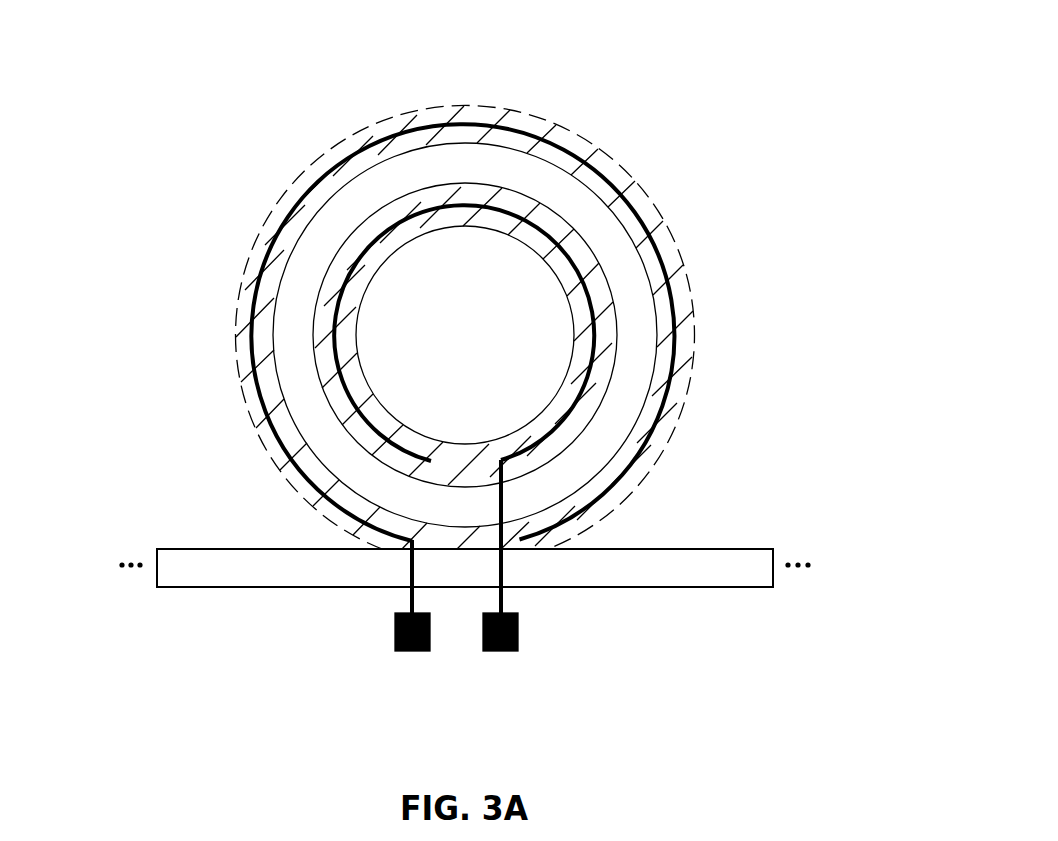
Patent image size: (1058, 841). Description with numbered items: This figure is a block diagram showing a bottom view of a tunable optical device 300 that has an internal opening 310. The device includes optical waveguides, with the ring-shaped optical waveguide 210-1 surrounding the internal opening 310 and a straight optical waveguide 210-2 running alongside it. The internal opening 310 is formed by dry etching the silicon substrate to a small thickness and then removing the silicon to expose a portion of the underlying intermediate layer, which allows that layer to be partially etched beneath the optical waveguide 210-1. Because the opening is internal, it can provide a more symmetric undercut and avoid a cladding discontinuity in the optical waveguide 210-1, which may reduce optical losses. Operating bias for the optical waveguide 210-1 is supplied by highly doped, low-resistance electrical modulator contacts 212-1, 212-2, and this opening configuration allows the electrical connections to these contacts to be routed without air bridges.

The tunable optical device 300 is at (675, 92).
The optical waveguide 210-1 is at (348, 202).
The internal opening 310 is at (430, 318).
The optical waveguide 210-2 is at (195, 568).
The electrical modulator contact 212-1 is at (394, 635).
The electrical modulator contact 212-2 is at (519, 635).